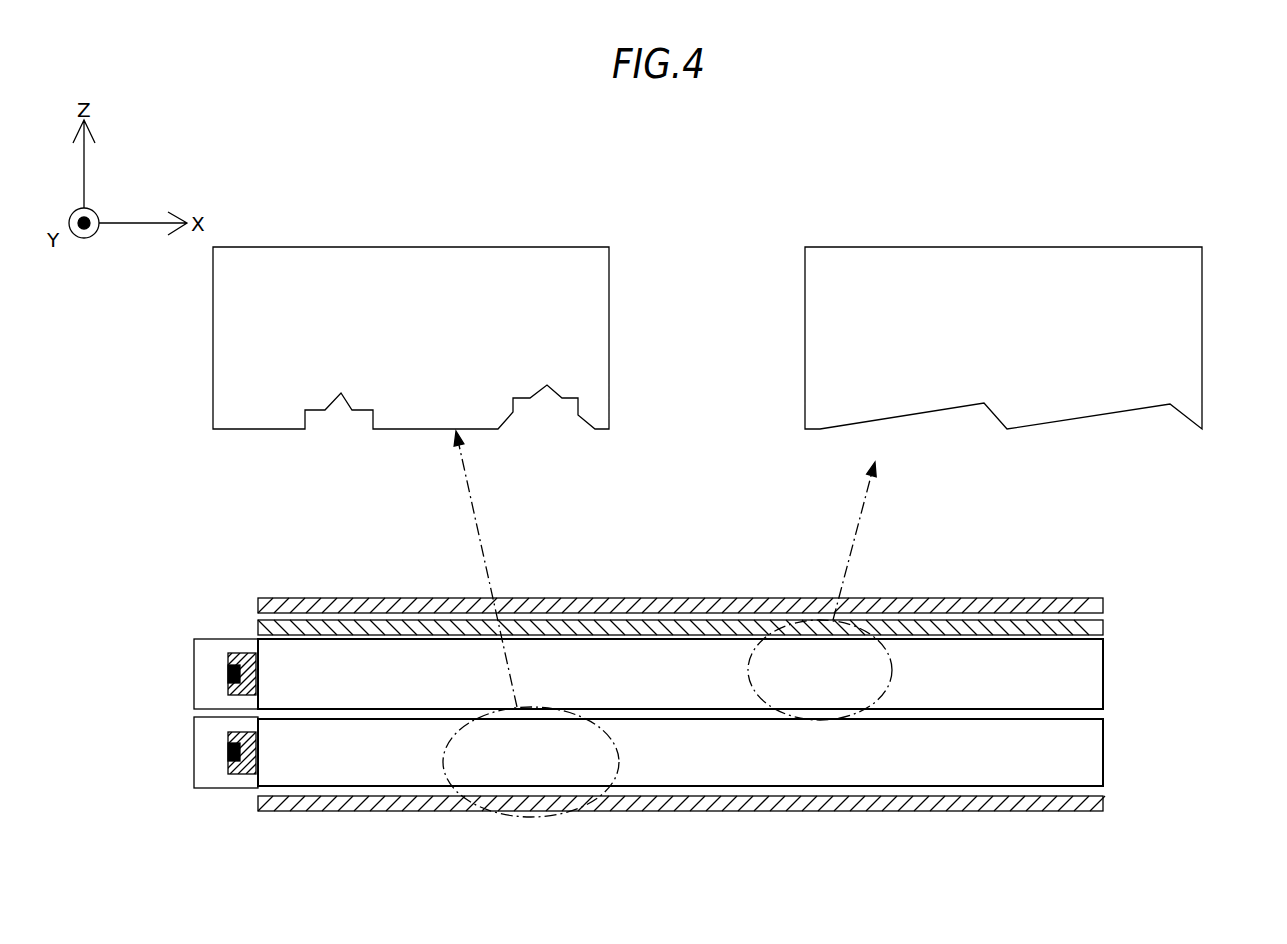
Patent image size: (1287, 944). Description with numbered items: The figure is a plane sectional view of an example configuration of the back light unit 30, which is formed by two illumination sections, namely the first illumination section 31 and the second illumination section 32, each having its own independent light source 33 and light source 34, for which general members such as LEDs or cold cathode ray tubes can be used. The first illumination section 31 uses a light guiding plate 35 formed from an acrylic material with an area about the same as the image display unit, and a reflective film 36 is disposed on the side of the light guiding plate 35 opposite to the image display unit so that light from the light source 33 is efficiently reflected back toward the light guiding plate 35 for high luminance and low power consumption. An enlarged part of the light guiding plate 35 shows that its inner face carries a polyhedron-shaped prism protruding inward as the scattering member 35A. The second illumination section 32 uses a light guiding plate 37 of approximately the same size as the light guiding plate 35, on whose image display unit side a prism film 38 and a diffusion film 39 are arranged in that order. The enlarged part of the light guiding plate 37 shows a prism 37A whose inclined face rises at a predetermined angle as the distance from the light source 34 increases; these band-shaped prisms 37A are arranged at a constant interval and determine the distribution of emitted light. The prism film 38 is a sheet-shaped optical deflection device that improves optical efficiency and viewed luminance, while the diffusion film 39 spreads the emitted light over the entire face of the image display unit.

The back light unit 30 is at (989, 552).
The first illumination section 31 is at (354, 800).
The second illumination section 32 is at (716, 729).
The light source 33 is at (203, 757).
The light source 34 is at (203, 677).
The light guiding plate 35 is at (390, 256).
The scattering member 35A is at (569, 389).
The reflective film 36 is at (1095, 805).
The light guiding plate 37 is at (977, 256).
The prism 37A is at (1181, 398).
The prism film 38 is at (1104, 625).
The diffusion film 39 is at (1103, 606).